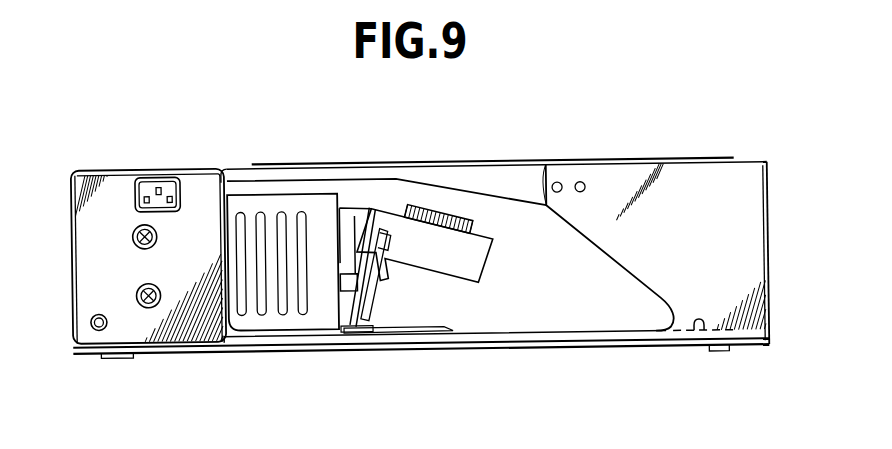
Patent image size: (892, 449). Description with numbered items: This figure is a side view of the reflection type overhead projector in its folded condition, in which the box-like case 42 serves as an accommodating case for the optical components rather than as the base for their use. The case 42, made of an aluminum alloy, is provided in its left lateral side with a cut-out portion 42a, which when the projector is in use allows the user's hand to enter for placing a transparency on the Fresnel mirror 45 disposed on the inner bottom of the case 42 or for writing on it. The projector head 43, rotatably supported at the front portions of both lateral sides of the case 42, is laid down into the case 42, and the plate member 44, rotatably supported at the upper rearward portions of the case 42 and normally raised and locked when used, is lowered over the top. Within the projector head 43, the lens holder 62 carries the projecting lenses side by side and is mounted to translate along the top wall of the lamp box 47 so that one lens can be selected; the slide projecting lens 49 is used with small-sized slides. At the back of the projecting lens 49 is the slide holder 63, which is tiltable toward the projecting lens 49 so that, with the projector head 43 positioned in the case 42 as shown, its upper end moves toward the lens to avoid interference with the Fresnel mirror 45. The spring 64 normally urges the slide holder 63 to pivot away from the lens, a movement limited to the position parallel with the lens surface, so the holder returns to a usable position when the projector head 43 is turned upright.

The case 42 is at (758, 237).
The cut-out portion 42a is at (634, 276).
The projector head 43 is at (362, 200).
The plate member 44 is at (388, 162).
The Fresnel mirror 45 is at (696, 336).
The lamp box 47 is at (290, 323).
The projecting lens 49 is at (450, 207).
The lens holder 62 is at (478, 259).
The slide holder 63 is at (413, 328).
The spring 64 is at (373, 322).